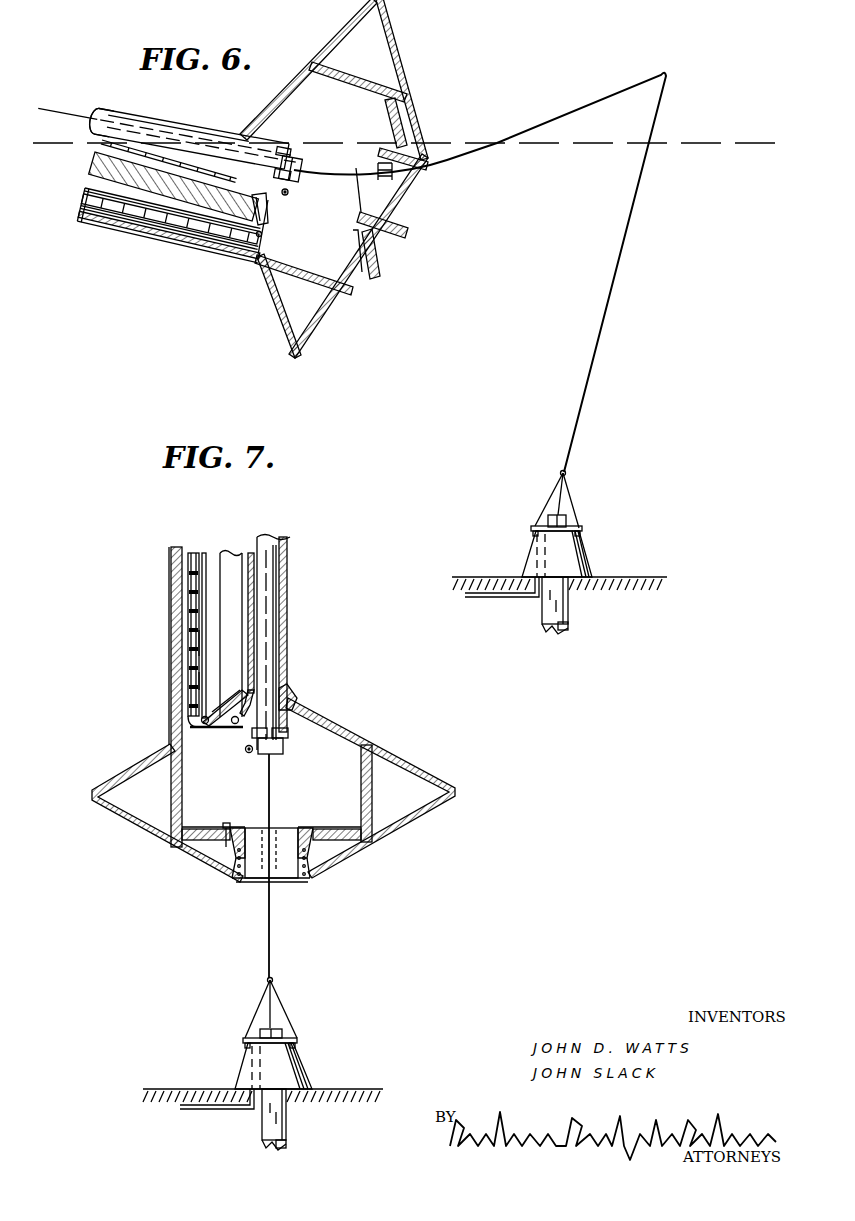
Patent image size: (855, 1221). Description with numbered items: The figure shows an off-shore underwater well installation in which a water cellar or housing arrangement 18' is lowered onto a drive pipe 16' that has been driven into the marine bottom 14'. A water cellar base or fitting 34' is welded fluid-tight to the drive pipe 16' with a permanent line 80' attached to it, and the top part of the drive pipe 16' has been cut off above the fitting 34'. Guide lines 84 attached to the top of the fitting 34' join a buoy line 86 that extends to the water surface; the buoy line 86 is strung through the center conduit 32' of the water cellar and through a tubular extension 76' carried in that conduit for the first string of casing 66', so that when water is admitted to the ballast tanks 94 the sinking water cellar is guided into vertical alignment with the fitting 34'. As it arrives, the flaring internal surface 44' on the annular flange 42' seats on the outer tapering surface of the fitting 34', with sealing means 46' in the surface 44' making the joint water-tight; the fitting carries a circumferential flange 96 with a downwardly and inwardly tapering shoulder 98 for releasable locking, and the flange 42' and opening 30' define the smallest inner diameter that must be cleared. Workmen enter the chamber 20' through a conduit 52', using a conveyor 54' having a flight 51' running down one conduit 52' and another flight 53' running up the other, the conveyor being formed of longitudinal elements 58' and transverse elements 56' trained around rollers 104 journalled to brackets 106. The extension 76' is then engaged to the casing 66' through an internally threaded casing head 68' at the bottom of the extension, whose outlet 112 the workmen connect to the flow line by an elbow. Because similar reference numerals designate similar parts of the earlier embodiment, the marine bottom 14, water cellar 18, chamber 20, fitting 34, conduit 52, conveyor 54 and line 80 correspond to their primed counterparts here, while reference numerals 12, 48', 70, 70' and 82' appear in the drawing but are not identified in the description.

In FIG. 6, the cushioning assembly 12 is at (185, 167).
In FIG. 7, the ground surface 14 is at (254, 1077).
In FIG. 6, the marine bottom 14' is at (577, 564).
In FIG. 6, the drive pipe 16' is at (544, 565).
In FIG. 7, the drive pipe 16' is at (304, 1080).
In FIG. 7, the housing assembly 18 is at (465, 850).
In FIG. 6, the water cellar or housing arrangement 18' is at (202, 290).
In FIG. 6, the housing chamber 20 is at (343, 158).
In FIG. 7, the chamber 20' is at (342, 793).
In FIG. 6, the opening 30' is at (363, 217).
In FIG. 7, the opening 30' is at (260, 840).
In FIG. 6, the center conduit 32' is at (188, 118).
In FIG. 7, the center conduit 32' is at (287, 643).
In FIG. 7, the cone collar 34 is at (291, 1066).
In FIG. 6, the water cellar base or fitting 34' is at (576, 554).
In FIG. 6, the annular flange 42' is at (412, 242).
In FIG. 7, the annular flange 42' is at (287, 896).
In FIG. 6, the flaring internal surface 44' is at (413, 207).
In FIG. 7, the flaring internal surface 44' is at (271, 866).
In FIG. 7, the sealing means 46' is at (260, 871).
In FIG. 6, the wall plate 48' is at (231, 266).
In FIG. 7, the wall plate 48' is at (236, 708).
In FIG. 7, the flight 51' is at (227, 626).
In FIG. 6, the cushion block 52 is at (171, 227).
In FIG. 6, the conduit 52' is at (174, 186).
In FIG. 7, the conduit 52' is at (191, 634).
In FIG. 7, the flight 53' is at (238, 745).
In FIG. 6, the bracket 54 is at (281, 209).
In FIG. 7, the conveyor 54' is at (215, 639).
In FIG. 6, the transverse elements 56' is at (170, 218).
In FIG. 7, the transverse elements 56' is at (221, 679).
In FIG. 6, the longitudinal elements 58' is at (67, 221).
In FIG. 7, the longitudinal elements 58' is at (221, 642).
In FIG. 6, the first string of casing 66' is at (592, 563).
In FIG. 7, the first string of casing 66' is at (265, 1085).
In FIG. 6, the casing head 68' is at (308, 164).
In FIG. 7, the casing head 68' is at (287, 759).
In FIG. 6, the nut 70 is at (285, 149).
In FIG. 7, the nut 70' is at (290, 742).
In FIG. 6, the tubular extension 76' is at (82, 102).
In FIG. 7, the tubular extension 76' is at (297, 642).
In FIG. 7, the anchor bracket 80 is at (216, 1117).
In FIG. 6, the permanent line 80' is at (502, 604).
In FIG. 6, the buried portion 82' is at (507, 555).
In FIG. 7, the buried portion 82' is at (224, 1067).
In FIG. 6, the guide lines 84 is at (567, 492).
In FIG. 7, the guide lines 84 is at (267, 996).
In FIG. 6, the buoy line 86 is at (50, 112).
In FIG. 7, the buoy line 86 is at (272, 942).
In FIG. 6, the ballast tanks 94 is at (368, 52).
In FIG. 7, the ballast tanks 94 is at (135, 780).
In FIG. 6, the circumferential flange 96 is at (586, 528).
In FIG. 7, the circumferential flange 96 is at (298, 1040).
In FIG. 6, the tapering shoulder 98 is at (534, 529).
In FIG. 7, the tapering shoulder 98 is at (249, 1044).
In FIG. 6, the rollers 104 is at (262, 235).
In FIG. 7, the rollers 104 is at (214, 712).
In FIG. 6, the brackets 106 is at (269, 200).
In FIG. 7, the outlet 112 is at (250, 753).